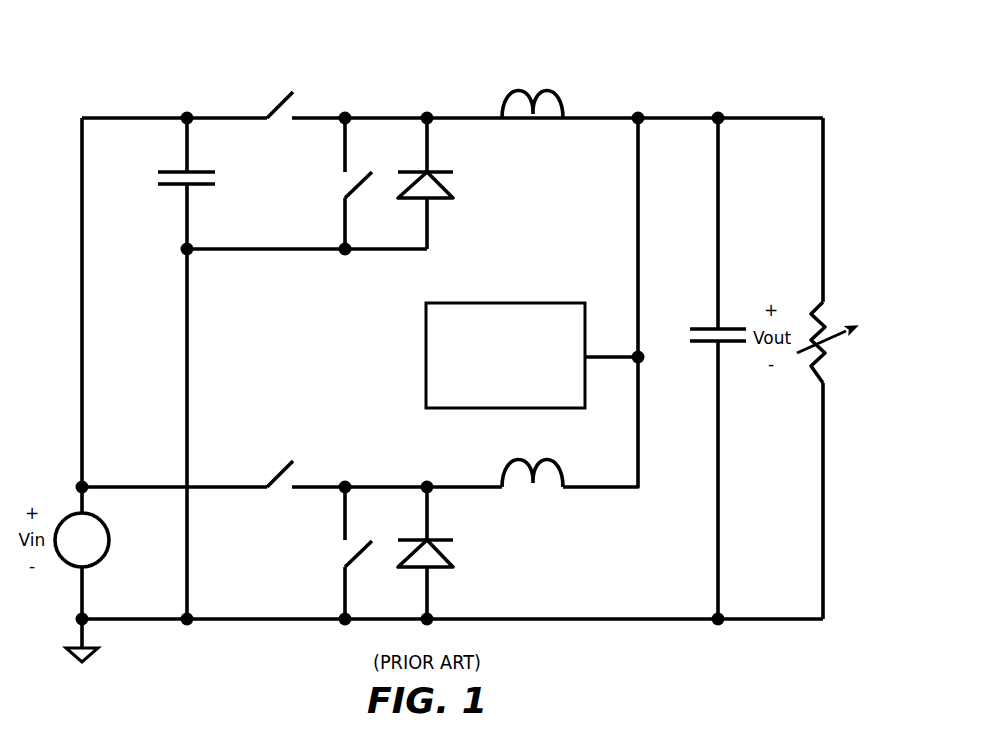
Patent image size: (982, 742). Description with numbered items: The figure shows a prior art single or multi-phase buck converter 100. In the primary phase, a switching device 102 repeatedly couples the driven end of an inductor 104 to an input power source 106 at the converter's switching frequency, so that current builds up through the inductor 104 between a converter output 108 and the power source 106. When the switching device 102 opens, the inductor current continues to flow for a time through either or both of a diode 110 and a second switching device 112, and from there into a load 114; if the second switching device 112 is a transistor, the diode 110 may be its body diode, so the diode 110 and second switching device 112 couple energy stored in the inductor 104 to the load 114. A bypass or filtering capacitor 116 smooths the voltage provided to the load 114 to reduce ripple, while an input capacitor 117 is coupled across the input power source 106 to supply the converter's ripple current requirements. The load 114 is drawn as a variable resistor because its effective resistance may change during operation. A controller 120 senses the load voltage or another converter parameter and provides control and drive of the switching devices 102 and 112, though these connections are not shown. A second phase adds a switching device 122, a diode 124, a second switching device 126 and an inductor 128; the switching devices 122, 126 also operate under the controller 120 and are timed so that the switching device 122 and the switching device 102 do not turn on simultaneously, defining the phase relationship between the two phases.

The buck converter 100 is at (836, 88).
The switching device 102 is at (313, 95).
The inductor 104 is at (533, 132).
The input power source 106 is at (110, 540).
The converter output 108 is at (719, 111).
The diode 110 is at (467, 216).
The second switching device 112 is at (330, 185).
The load 114 is at (842, 365).
The filtering capacitor 116 is at (697, 364).
The input capacitor 117 is at (140, 176).
The controller 120 is at (490, 395).
The switching device 122 is at (304, 474).
The diode 124 is at (470, 573).
The second switching device 126 is at (328, 545).
The inductor 128 is at (534, 500).